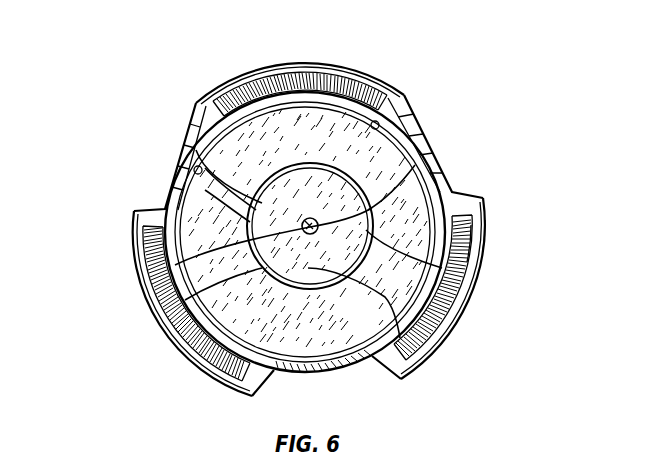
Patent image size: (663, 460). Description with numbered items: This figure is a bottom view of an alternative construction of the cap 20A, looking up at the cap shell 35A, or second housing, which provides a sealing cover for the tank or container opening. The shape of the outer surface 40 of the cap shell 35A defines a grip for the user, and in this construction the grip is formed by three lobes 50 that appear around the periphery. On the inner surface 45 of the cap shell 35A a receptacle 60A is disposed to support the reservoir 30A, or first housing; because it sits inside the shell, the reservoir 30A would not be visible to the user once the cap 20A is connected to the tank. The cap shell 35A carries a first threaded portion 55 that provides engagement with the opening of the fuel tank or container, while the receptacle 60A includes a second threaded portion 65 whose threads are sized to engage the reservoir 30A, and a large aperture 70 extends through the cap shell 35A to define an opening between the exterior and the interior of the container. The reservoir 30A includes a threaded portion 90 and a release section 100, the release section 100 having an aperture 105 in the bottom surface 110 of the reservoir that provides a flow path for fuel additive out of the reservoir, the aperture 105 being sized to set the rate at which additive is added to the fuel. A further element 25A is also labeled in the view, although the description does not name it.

The cap 20A is at (131, 53).
The lobes 50 is at (305, 66).
The inner surface 45 is at (406, 106).
The arm 25A is at (415, 165).
The reservoir 30A is at (436, 168).
The aperture 70 is at (442, 188).
The cap shell 35A is at (474, 222).
The outer surface 40 is at (484, 236).
The receptacle 60A is at (196, 150).
The first threaded portion 55 is at (205, 168).
The second threaded portion 65 is at (205, 190).
The threaded portion 90 is at (175, 265).
The release section 100 is at (185, 300).
The aperture 105 is at (448, 310).
The bottom surface 110 is at (430, 350).